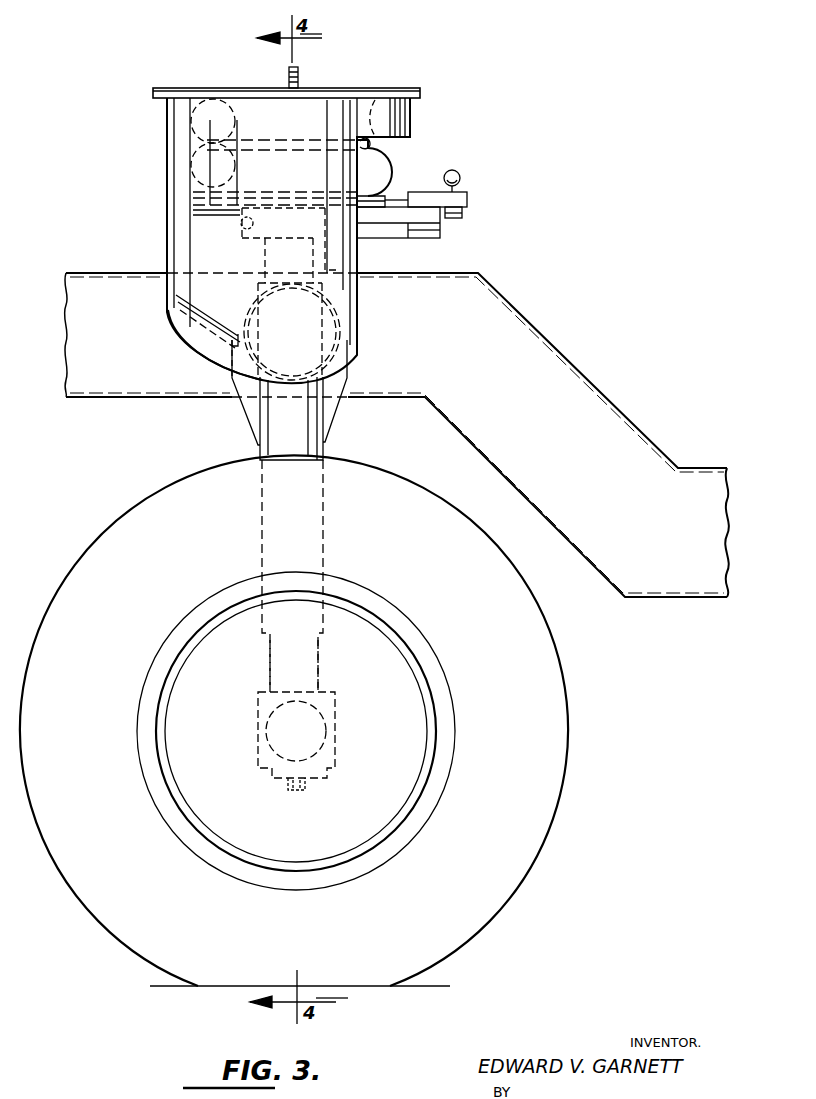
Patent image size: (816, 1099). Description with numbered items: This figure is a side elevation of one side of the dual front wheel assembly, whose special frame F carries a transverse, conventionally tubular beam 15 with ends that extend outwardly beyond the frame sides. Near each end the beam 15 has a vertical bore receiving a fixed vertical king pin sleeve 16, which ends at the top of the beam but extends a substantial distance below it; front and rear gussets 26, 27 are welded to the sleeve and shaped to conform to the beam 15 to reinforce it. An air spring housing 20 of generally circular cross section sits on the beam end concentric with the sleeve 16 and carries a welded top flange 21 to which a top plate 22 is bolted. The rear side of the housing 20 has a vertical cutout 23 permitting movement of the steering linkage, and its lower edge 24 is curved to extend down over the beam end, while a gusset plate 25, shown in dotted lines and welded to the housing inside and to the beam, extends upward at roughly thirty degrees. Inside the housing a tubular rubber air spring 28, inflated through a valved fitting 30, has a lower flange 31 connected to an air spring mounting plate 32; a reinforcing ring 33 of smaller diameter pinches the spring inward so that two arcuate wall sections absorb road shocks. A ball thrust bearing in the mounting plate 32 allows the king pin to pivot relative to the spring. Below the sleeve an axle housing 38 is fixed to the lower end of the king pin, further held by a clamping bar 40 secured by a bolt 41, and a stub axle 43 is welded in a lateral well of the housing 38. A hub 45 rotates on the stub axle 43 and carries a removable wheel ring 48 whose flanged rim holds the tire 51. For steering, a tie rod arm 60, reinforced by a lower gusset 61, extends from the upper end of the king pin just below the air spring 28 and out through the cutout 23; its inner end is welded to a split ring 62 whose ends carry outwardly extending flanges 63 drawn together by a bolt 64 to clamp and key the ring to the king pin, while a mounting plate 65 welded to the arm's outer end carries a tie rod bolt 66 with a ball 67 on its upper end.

The frame F is at (630, 414).
The transverse beam 15 is at (340, 316).
The king pin sleeve 16 is at (325, 440).
The air spring housing 20 is at (167, 185).
The top flange 21 is at (421, 95).
The top plate 22 is at (364, 90).
The cutout 23 is at (358, 258).
The lower edge 24 is at (198, 350).
The gusset plate 25 is at (180, 322).
The front gusset 26 is at (248, 424).
The rear gusset 27 is at (343, 408).
The tubular rubber air spring 28 is at (388, 168).
The valved fitting 30 is at (300, 74).
The lower flange 31 is at (362, 190).
The air spring mounting plate 32 is at (386, 198).
The reinforcing ring 33 is at (371, 145).
The axle housing 38 is at (258, 705).
The clamping bar 40 is at (268, 772).
The bolt 41 is at (298, 792).
The stub axle 43 is at (330, 745).
The hub 45 is at (336, 834).
The wheel ring 48 is at (414, 812).
The tire 51 is at (550, 826).
The tie rod arm 60 is at (398, 226).
The lower gusset 61 is at (440, 234).
The split ring 62 is at (290, 236).
The flange 63 is at (240, 238).
The bolt 64 is at (240, 222).
The mounting plate 65 is at (428, 194).
The tie rod bolt 66 is at (463, 213).
The ball 67 is at (461, 176).